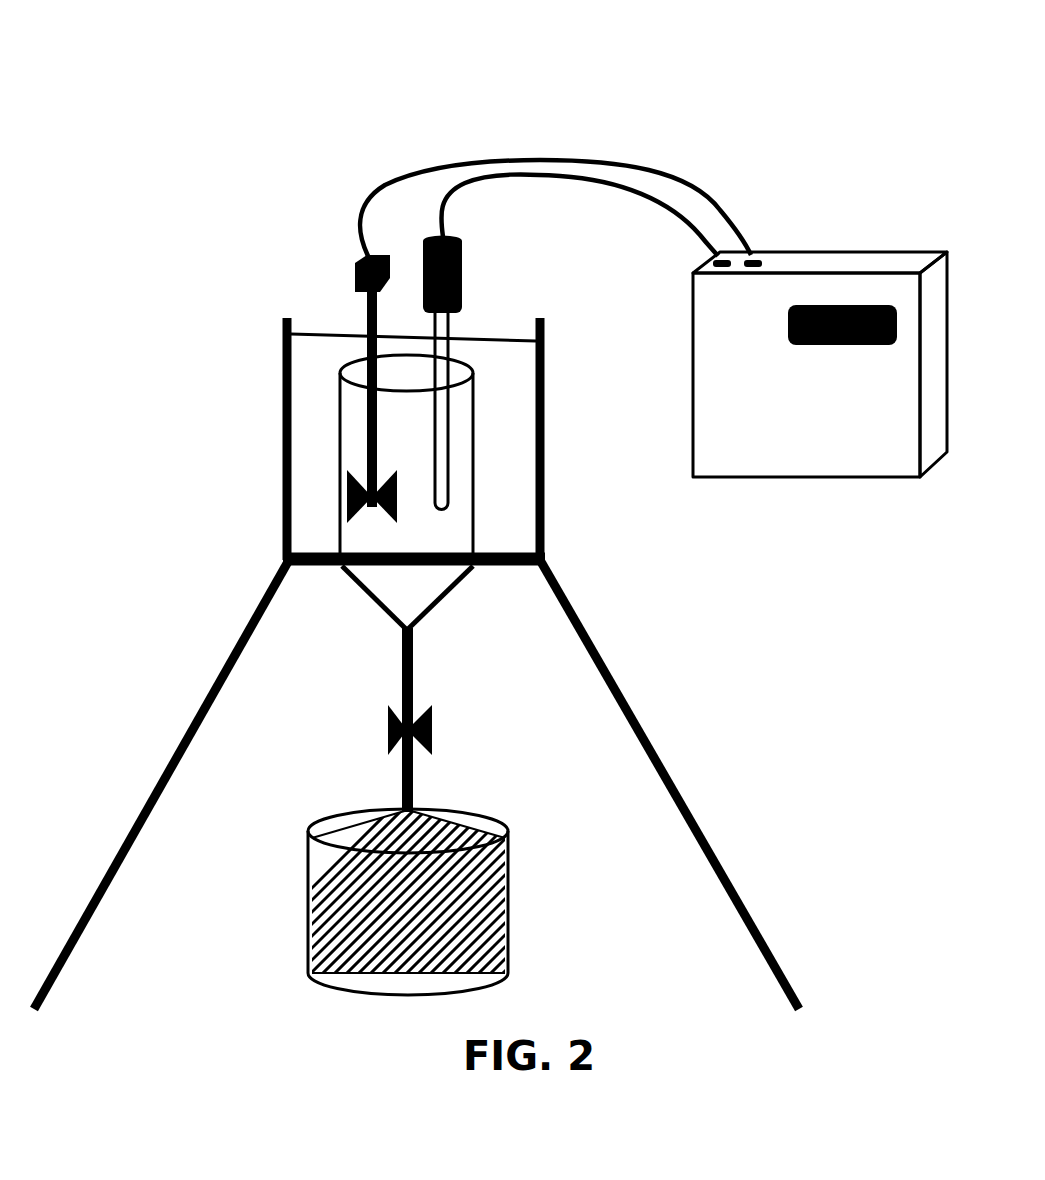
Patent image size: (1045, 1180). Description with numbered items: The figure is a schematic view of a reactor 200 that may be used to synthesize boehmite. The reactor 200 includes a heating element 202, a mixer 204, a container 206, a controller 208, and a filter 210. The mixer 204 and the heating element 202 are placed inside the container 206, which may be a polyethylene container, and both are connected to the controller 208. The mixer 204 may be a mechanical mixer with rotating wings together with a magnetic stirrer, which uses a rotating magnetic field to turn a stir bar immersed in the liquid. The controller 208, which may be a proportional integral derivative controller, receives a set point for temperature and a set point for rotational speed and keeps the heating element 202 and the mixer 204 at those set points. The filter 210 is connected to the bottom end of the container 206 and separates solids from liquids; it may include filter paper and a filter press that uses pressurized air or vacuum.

The reactor 200 is at (146, 39).
The heating element 202 is at (463, 270).
The mixer 204 is at (356, 262).
The container 206 is at (488, 550).
The controller 208 is at (848, 268).
The filter 210 is at (337, 895).